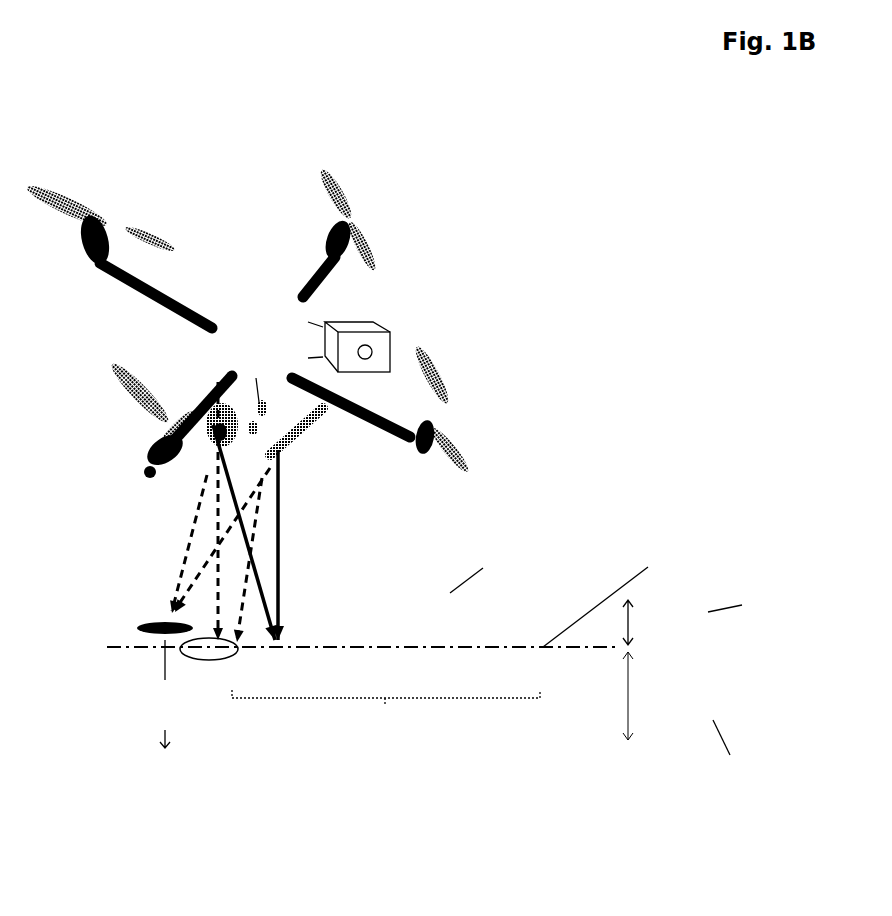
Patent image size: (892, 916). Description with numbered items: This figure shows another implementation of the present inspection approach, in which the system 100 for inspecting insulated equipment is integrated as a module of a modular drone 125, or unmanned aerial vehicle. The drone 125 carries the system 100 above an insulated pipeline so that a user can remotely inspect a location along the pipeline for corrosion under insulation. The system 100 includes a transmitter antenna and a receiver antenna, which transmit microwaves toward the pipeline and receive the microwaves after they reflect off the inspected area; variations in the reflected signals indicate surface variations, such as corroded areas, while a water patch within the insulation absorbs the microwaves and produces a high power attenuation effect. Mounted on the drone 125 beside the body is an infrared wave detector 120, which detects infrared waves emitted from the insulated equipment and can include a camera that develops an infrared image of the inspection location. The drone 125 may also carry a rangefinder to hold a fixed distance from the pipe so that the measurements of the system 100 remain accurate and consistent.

The modular drone 125 is at (59, 78).
The system for inspecting insulated equipment 100 is at (95, 442).
The infrared wave detector 120 is at (398, 343).